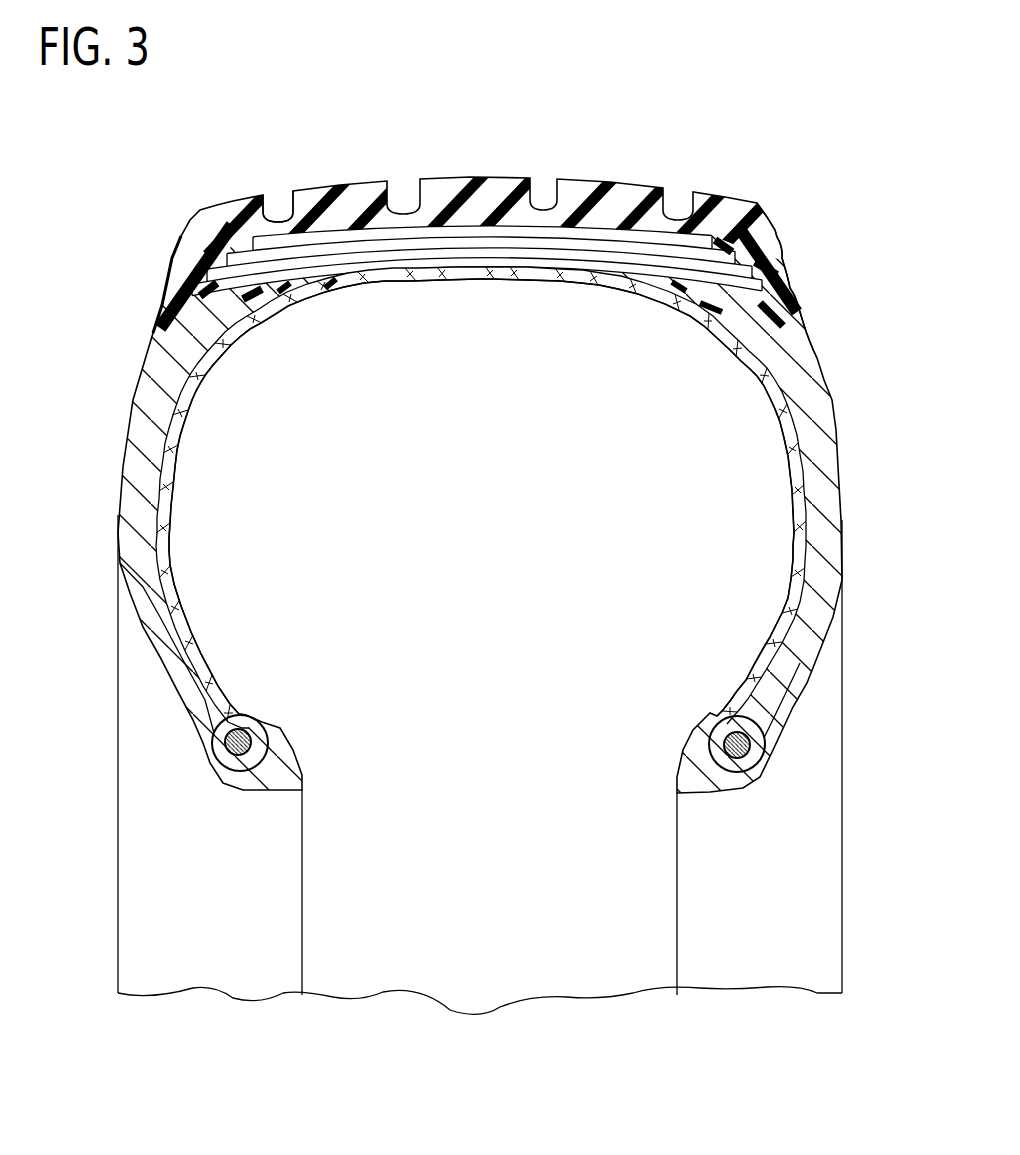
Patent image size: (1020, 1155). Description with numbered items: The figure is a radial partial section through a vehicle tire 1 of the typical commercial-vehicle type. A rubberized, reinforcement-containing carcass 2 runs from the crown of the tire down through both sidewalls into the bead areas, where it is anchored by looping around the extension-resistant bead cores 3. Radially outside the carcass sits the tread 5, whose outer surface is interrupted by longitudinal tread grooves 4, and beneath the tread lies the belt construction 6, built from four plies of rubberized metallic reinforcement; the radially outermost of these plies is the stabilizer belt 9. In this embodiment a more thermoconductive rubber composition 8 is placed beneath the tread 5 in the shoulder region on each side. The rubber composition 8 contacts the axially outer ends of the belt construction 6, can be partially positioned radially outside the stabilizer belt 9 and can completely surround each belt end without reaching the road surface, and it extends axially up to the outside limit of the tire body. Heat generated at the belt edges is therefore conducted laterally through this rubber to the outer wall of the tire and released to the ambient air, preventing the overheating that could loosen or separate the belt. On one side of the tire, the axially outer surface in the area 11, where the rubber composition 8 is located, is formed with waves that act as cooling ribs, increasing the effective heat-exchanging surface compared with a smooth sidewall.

The vehicle tire 1 is at (712, 148).
The carcass 2 is at (167, 586).
The bead cores 3 is at (258, 732).
The tread grooves 4 is at (273, 194).
The tread 5 is at (302, 190).
The belt construction 6 is at (176, 283).
The rubber composition 8 is at (162, 320).
The radially outer stabilizer belt 9 is at (777, 235).
The area 11 is at (835, 258).